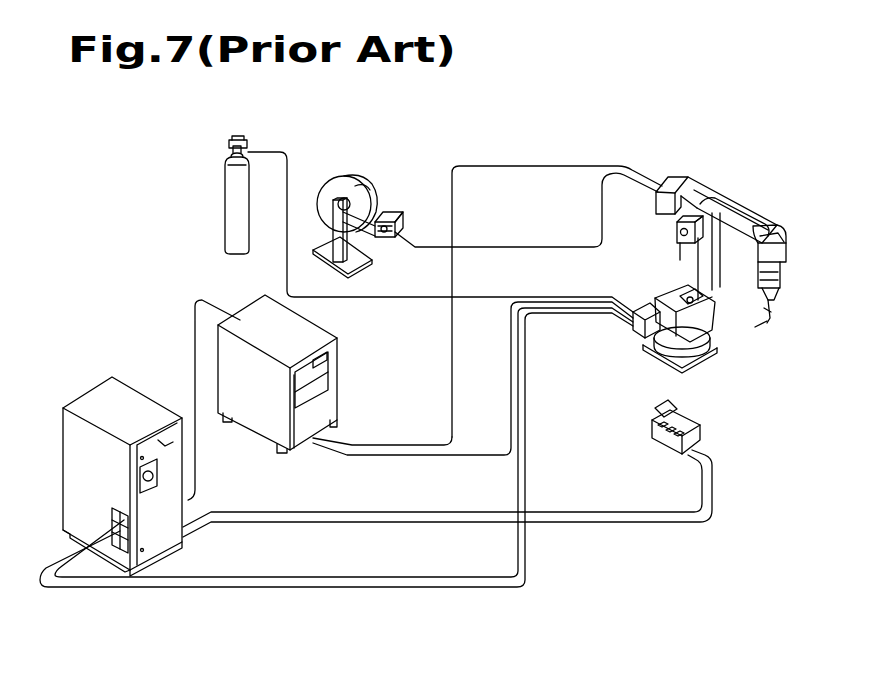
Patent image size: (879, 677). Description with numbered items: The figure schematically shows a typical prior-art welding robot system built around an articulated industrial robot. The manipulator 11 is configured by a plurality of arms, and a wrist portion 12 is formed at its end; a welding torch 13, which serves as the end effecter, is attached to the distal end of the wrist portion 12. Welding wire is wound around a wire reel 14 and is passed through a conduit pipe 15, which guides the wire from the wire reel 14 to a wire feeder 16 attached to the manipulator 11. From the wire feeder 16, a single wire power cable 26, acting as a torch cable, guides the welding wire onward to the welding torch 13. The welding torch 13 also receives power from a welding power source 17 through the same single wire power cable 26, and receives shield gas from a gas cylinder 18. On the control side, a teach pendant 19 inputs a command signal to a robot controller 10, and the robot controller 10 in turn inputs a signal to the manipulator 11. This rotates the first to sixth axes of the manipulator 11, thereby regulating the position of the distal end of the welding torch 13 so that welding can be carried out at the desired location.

The robot controller 10 is at (137, 392).
The manipulator 11 is at (709, 248).
The wrist portion 12 is at (751, 296).
The welding torch 13 is at (771, 326).
The wire reel 14 is at (360, 181).
The conduit pipe 15 is at (507, 247).
The wire feeder 16 is at (668, 176).
The welding power source 17 is at (340, 366).
The gas cylinder 18 is at (225, 201).
The teach pendant 19 is at (679, 421).
The single wire power cable 26 is at (758, 216).